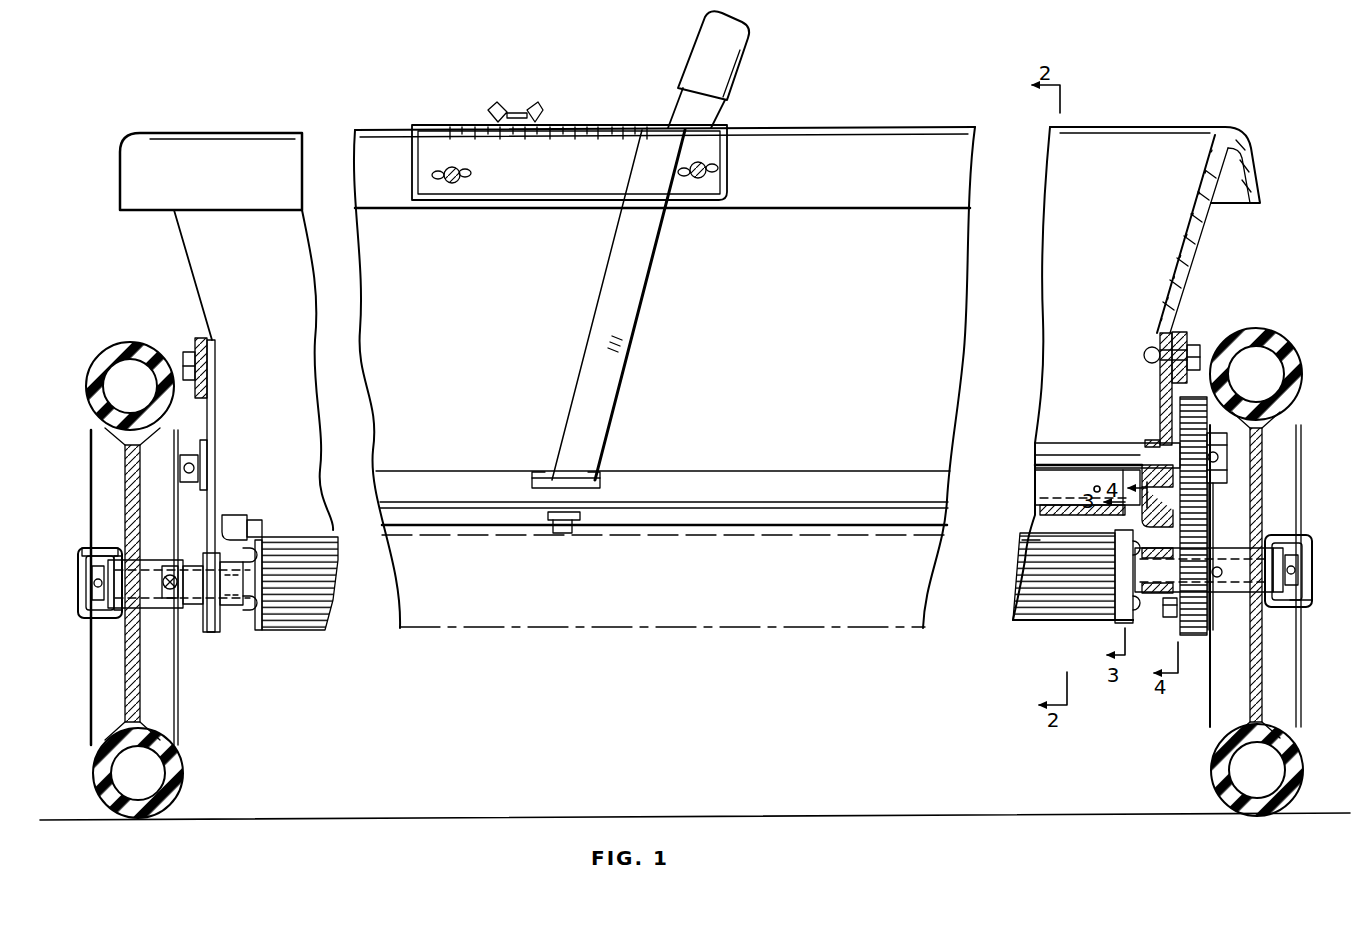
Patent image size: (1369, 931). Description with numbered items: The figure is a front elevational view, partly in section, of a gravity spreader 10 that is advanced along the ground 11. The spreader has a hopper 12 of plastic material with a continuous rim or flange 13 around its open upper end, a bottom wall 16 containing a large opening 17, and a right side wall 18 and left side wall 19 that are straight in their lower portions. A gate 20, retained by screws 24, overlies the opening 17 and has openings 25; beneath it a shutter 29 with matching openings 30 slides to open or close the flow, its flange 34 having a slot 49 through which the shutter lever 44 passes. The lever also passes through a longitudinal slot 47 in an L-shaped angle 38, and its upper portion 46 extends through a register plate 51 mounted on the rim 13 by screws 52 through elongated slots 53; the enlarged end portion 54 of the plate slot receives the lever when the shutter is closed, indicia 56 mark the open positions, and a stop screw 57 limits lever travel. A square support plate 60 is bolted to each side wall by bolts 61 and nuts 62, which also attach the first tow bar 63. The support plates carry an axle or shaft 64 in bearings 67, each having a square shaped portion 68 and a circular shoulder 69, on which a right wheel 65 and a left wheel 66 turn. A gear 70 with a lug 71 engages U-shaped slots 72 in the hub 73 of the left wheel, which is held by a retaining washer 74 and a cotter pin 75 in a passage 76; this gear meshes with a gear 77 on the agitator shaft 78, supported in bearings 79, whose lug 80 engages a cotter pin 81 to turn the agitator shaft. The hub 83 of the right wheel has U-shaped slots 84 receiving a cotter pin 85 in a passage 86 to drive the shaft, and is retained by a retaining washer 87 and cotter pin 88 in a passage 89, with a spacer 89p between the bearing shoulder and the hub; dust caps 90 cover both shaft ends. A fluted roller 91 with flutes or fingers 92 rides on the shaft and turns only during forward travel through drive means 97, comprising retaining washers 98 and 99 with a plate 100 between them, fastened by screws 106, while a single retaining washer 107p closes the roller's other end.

The gravity spreader 10 is at (1255, 124).
The ground 11 is at (850, 812).
The hopper 12 is at (1194, 260).
The rim or flange 13 is at (1262, 170).
The bottom wall 16 is at (257, 530).
The opening 17 is at (1123, 498).
The right side wall 18 is at (178, 236).
The left side wall 19 is at (1198, 235).
The gate 20 is at (1060, 476).
The screws 24 is at (1045, 490).
The openings 25 is at (1048, 508).
The shutter 29 is at (702, 535).
The openings 30 is at (1023, 540).
The flange 34 is at (497, 530).
The L-shaped angle 38 is at (718, 468).
The shutter lever 44 is at (636, 380).
The upper portion 46 is at (672, 247).
The longitudinal slot 47 is at (545, 478).
The slot 49 is at (585, 517).
The register plate 51 is at (732, 155).
The screws 52 is at (708, 180).
The elongated slots 53 is at (445, 172).
The enlarged end portion 54 is at (712, 130).
The indicia 56 is at (628, 135).
The stop screw 57 is at (543, 107).
The support plate 60 is at (193, 410).
The bolts 61 is at (1146, 353).
The nuts 62 is at (188, 350).
The first tow bar 63 is at (200, 340).
The axle or shaft 64 is at (147, 600).
The right wheel 65 is at (90, 775).
The left wheel 66 is at (1207, 760).
The bearing 67 is at (230, 614).
The square shaped portion 68 is at (225, 533).
The circular shoulder 69 is at (205, 622).
The gear 70 is at (1187, 630).
The lug 71 is at (1217, 597).
The U-shaped slots 72 is at (1213, 557).
The hub 73 is at (1262, 622).
The retaining washer 74 is at (1305, 606).
The cotter pin 75 is at (1305, 552).
The passage 76 is at (1300, 576).
The gear 77 is at (1200, 400).
The agitator shaft 78 is at (1063, 443).
The bearings 79 is at (207, 437).
The lug 80 is at (1226, 437).
The cotter pin 81 is at (1226, 457).
The hub 83 is at (147, 560).
The U-shaped slots 84 is at (158, 587).
The cotter pin 85 is at (180, 575).
The passage 86 is at (170, 575).
The retaining washer 87 is at (83, 617).
The cotter pin 88 is at (82, 608).
The passage 89 is at (83, 560).
The spacer 89p is at (193, 620).
The dust cap 90 is at (80, 578).
The fluted roller 91 is at (1056, 627).
The flutes or fingers 92 is at (307, 630).
The drive means 97 is at (1138, 633).
The retaining washer 98 is at (1133, 612).
The retaining washer 99 is at (1110, 602).
The plate 100 is at (1137, 610).
The screws 106 is at (257, 548).
The retaining washer 107p is at (252, 628).